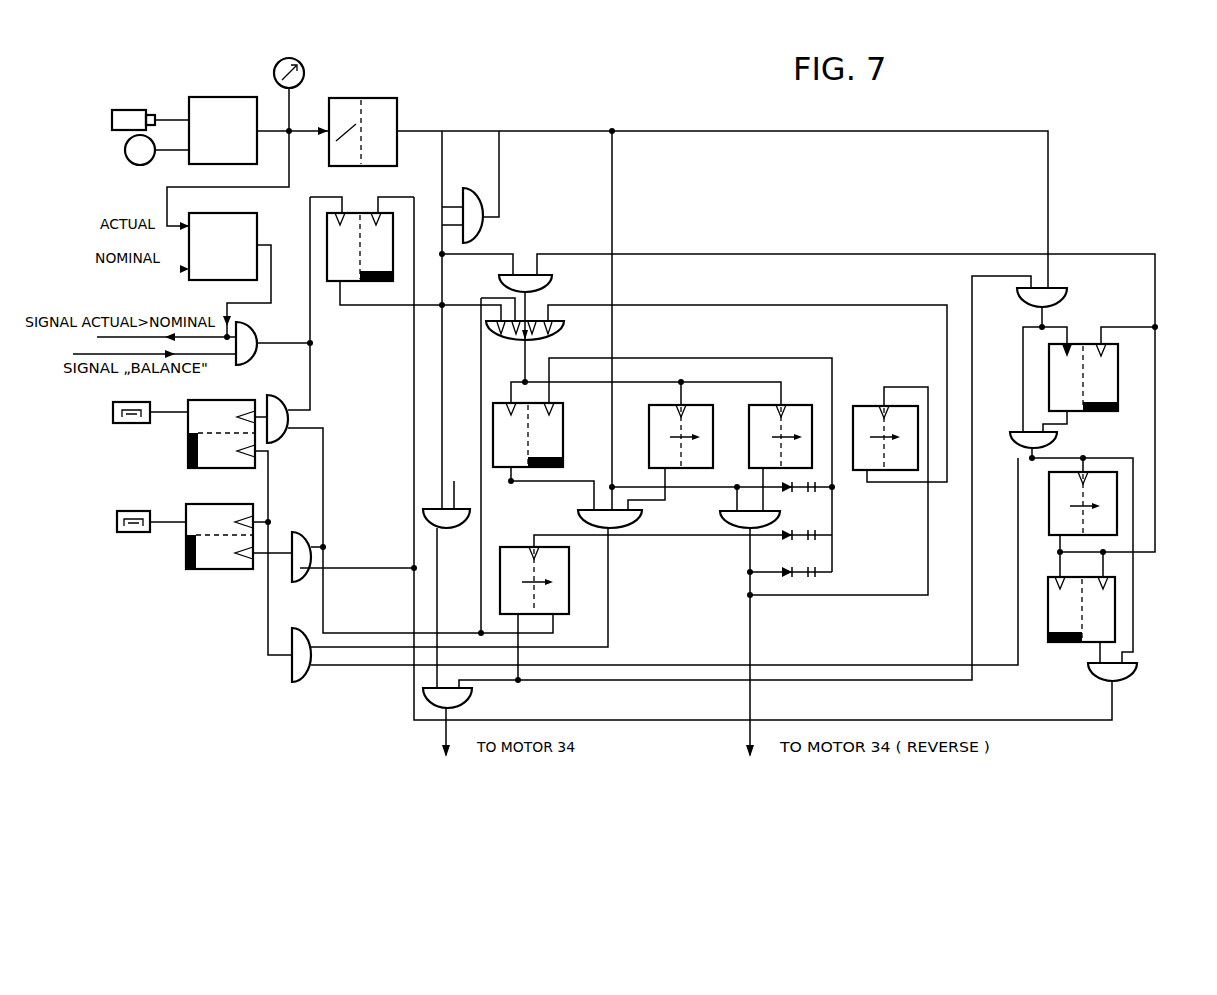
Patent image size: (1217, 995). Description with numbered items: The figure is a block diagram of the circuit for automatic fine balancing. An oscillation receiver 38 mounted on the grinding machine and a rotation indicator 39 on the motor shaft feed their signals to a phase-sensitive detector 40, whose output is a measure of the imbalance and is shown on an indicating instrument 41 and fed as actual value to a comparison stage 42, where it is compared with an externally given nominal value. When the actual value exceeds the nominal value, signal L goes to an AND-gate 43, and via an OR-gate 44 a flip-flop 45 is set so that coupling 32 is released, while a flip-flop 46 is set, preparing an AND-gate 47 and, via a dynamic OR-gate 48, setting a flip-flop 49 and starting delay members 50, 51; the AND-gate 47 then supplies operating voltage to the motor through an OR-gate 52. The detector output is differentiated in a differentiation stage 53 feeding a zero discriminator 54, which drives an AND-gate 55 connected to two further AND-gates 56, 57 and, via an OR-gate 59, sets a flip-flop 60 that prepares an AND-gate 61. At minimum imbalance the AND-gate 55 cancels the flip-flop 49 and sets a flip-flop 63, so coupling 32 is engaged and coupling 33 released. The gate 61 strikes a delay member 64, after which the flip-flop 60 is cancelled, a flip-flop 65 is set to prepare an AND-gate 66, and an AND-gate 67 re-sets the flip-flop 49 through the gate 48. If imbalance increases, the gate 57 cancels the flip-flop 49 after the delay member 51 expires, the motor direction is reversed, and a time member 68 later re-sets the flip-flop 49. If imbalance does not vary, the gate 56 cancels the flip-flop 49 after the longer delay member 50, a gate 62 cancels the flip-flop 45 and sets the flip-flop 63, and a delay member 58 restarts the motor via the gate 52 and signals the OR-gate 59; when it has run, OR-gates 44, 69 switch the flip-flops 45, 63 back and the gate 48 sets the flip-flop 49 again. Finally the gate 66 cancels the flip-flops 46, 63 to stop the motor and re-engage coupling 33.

The coupling 32 is at (131, 424).
The coupling 33 is at (131, 511).
The oscillation receiver 38 is at (112, 121).
The rotation indicator 39 is at (125, 151).
The phase-sensitive detector 40 is at (231, 97).
The indicating instrument 41 is at (300, 69).
The comparison stage 42 is at (252, 226).
The AND-gate 43 is at (252, 351).
The OR-gate 44 is at (283, 404).
The flip-flop 45 is at (228, 402).
The flip-flop 46 is at (335, 283).
The AND-gate 47 is at (454, 530).
The dynamic OR-gate 48 is at (560, 328).
The flip-flop 49 is at (496, 404).
The delay member 50 is at (708, 456).
The delay member 51 is at (796, 394).
The OR-gate 52 is at (470, 694).
The differentiation stage 53 is at (348, 100).
The zero discriminator 54 is at (397, 101).
The AND-gate 55 is at (473, 195).
The AND-gate 56 is at (640, 515).
The AND-gate 57 is at (727, 514).
The delay member 58 is at (519, 533).
The OR-gate 59 is at (1063, 298).
The flip-flop 60 is at (1112, 371).
The AND-gate 61 is at (1013, 444).
The gate 62 is at (309, 676).
The flip-flop 63 is at (231, 568).
The delay member 64 is at (1050, 497).
The flip-flop 65 is at (1052, 624).
The AND-gate 66 is at (1131, 675).
The AND-gate 67 is at (553, 282).
The time member 68 is at (865, 411).
The OR-gate 69 is at (301, 535).